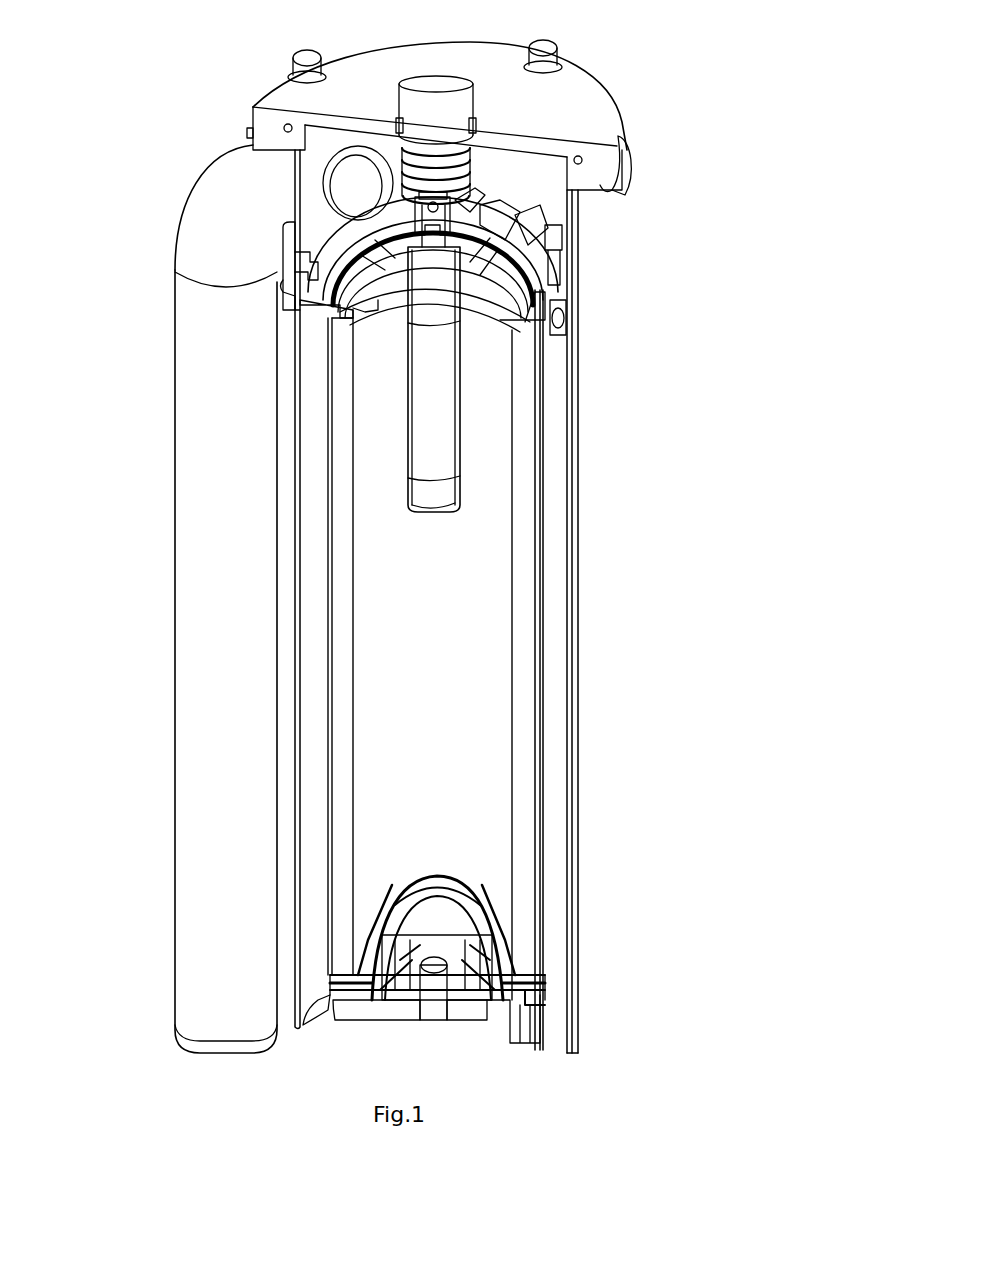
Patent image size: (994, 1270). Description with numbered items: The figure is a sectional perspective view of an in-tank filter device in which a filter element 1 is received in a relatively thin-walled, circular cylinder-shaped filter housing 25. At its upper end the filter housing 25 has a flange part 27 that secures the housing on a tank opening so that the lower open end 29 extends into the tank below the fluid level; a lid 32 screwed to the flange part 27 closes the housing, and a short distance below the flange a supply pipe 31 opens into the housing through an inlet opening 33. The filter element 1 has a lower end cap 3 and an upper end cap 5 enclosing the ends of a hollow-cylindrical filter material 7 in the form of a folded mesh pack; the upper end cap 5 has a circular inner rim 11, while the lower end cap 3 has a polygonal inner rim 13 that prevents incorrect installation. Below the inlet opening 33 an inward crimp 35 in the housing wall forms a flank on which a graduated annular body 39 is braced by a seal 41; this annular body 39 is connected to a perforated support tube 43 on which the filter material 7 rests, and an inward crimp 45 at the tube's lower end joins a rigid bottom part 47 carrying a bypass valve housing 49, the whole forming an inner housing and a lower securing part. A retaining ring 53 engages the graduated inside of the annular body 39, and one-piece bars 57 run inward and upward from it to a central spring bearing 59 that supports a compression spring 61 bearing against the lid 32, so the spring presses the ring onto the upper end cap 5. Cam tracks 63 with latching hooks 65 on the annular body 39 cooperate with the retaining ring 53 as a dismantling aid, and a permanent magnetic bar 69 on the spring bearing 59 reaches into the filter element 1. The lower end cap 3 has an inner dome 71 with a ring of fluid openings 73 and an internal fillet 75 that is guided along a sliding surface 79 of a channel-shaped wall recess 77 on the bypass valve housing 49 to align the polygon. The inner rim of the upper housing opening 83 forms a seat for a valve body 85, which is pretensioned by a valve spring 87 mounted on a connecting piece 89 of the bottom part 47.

The filter element 1 is at (318, 513).
The lower end cap 3 is at (547, 987).
The upper end cap 5 is at (328, 307).
The filter material 7 is at (310, 450).
The inner rim 11 is at (382, 307).
The inner rim 13 is at (330, 972).
The filter housing 25 is at (573, 600).
The flange part 27 is at (607, 180).
The lower open end 29 is at (570, 1053).
The supply pipe 31 is at (200, 328).
The lid 32 is at (290, 90).
The inlet opening 33 is at (327, 170).
The inward crimp 35 is at (570, 330).
The graduated annular body 39 is at (307, 268).
The seal 41 is at (293, 288).
The support tube 43 is at (490, 947).
The inward crimp 45 is at (330, 997).
The bottom part 47 is at (378, 1008).
The bypass valve housing 49 is at (377, 952).
The retaining ring 53 is at (313, 233).
The bars 57 is at (527, 217).
The spring bearing 59 is at (470, 190).
The compression spring 61 is at (478, 142).
The cam tracks 63 is at (490, 205).
The latching hook 65 is at (567, 237).
The permanent magnetic bar 69 is at (417, 323).
The dome 71 is at (498, 917).
The fluid openings 73 is at (470, 875).
The fillet 75 is at (508, 960).
The wall recess 77 is at (510, 968).
The sliding surface 79 is at (545, 967).
The upper housing opening 83 is at (400, 883).
The valve body 85 is at (377, 920).
The valve spring 87 is at (472, 1015).
The connecting piece 89 is at (425, 1008).